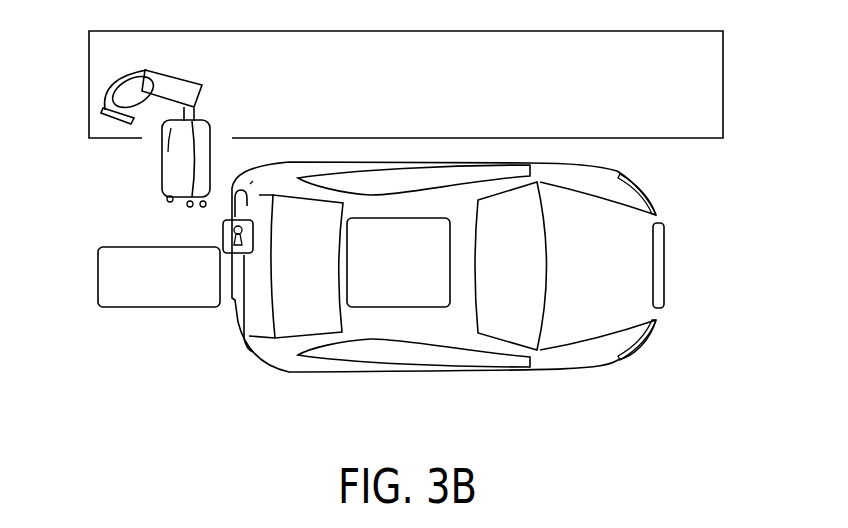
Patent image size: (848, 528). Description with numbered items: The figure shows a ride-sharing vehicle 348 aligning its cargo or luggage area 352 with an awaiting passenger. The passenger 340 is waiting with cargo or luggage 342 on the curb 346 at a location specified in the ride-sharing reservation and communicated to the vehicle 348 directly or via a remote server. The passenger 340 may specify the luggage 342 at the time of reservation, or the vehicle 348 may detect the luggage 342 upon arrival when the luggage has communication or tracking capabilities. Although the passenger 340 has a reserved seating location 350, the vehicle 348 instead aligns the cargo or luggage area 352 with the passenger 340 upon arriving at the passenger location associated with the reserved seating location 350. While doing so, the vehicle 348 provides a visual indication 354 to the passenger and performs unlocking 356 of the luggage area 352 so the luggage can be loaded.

The passenger 340 is at (138, 68).
The luggage 342 is at (162, 172).
The curb 346 is at (725, 58).
The vehicle 348 is at (648, 188).
The reserved seating location 350 is at (392, 307).
The cargo or luggage area 352 is at (223, 357).
The visual indication 354 is at (98, 273).
The unlocking 356 is at (222, 236).